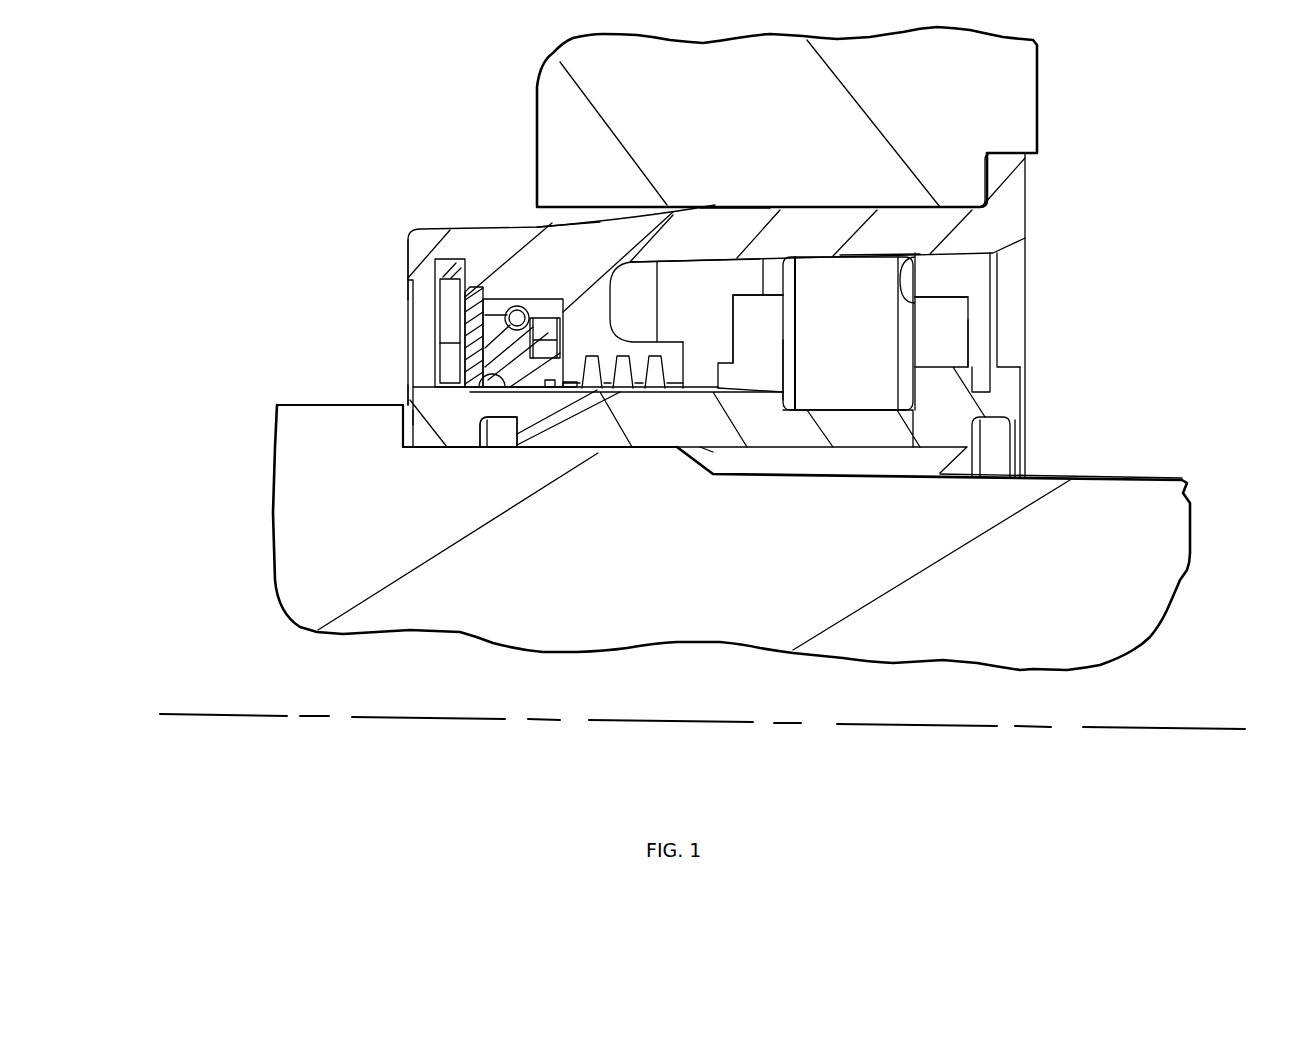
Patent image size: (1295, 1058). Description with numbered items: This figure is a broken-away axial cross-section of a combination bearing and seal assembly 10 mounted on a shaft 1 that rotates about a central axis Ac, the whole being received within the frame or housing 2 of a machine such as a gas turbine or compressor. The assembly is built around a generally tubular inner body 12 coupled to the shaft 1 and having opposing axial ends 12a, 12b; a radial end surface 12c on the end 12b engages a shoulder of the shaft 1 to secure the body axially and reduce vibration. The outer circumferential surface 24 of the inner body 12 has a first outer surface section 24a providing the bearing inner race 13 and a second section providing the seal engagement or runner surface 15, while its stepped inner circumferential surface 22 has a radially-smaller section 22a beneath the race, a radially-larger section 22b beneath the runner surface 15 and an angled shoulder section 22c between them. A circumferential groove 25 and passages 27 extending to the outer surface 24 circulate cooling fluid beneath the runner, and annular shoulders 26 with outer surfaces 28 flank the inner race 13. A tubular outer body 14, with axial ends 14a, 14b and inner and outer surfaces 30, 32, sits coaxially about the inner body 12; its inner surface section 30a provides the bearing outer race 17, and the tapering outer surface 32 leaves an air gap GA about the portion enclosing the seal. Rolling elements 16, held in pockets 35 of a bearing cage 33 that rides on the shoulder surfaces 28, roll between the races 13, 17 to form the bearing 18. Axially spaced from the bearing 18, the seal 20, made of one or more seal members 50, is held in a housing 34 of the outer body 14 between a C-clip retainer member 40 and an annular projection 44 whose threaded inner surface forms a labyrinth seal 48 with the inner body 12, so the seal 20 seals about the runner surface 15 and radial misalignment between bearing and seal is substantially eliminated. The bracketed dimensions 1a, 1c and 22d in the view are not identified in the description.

The shaft 1 is at (320, 400).
The seal flange portion 1a is at (718, 450).
The case notch 1c is at (430, 420).
The frame or housing 2 is at (533, 130).
The combination bearing and seal assembly 10 is at (343, 212).
The tubular inner body 12 is at (614, 453).
The axial end of inner body 12a is at (1022, 397).
The axial end of inner body 12b is at (412, 410).
The radial end surface 12c is at (403, 418).
The bearing inner race 13 is at (850, 406).
The tubular outer body 14 is at (829, 210).
The first axial end of outer body 14a is at (1026, 218).
The second axial end of outer body 14b is at (407, 252).
The seal engagement or runner surface 15 is at (478, 395).
The rolling elements 16 is at (922, 296).
The bearing outer race 17 is at (850, 262).
The bearing 18 is at (942, 322).
The seal 20 is at (492, 302).
The inner circumferential surface 22 is at (832, 486).
The radially-smaller section 22a is at (893, 480).
The radially-larger section 22b is at (538, 449).
The angled shoulder section 22c is at (700, 452).
The shaft end face 22d is at (443, 450).
The outer circumferential surface 24 is at (698, 383).
The first outer circumferential surface section 24a is at (878, 408).
The circumferential groove 25 is at (493, 447).
The annular shoulders 26 is at (750, 378).
The passages 27 is at (565, 412).
The shoulder outer circumferential surface 28 is at (765, 367).
The inner circumferential surface of outer body 30 is at (730, 252).
The inner circumferential surface section 30a is at (888, 254).
The outer circumferential surface of outer body 32 is at (740, 207).
The bearing cage 33 is at (970, 344).
The housing for seal 34 is at (550, 308).
The pockets 35 is at (905, 297).
The retainer member 40 is at (438, 307).
The annular projection 44 is at (620, 323).
The labyrinth seal 48 is at (656, 392).
The seal members 50 is at (488, 353).
The air gap GA is at (545, 215).
The central axis Ac is at (1193, 728).